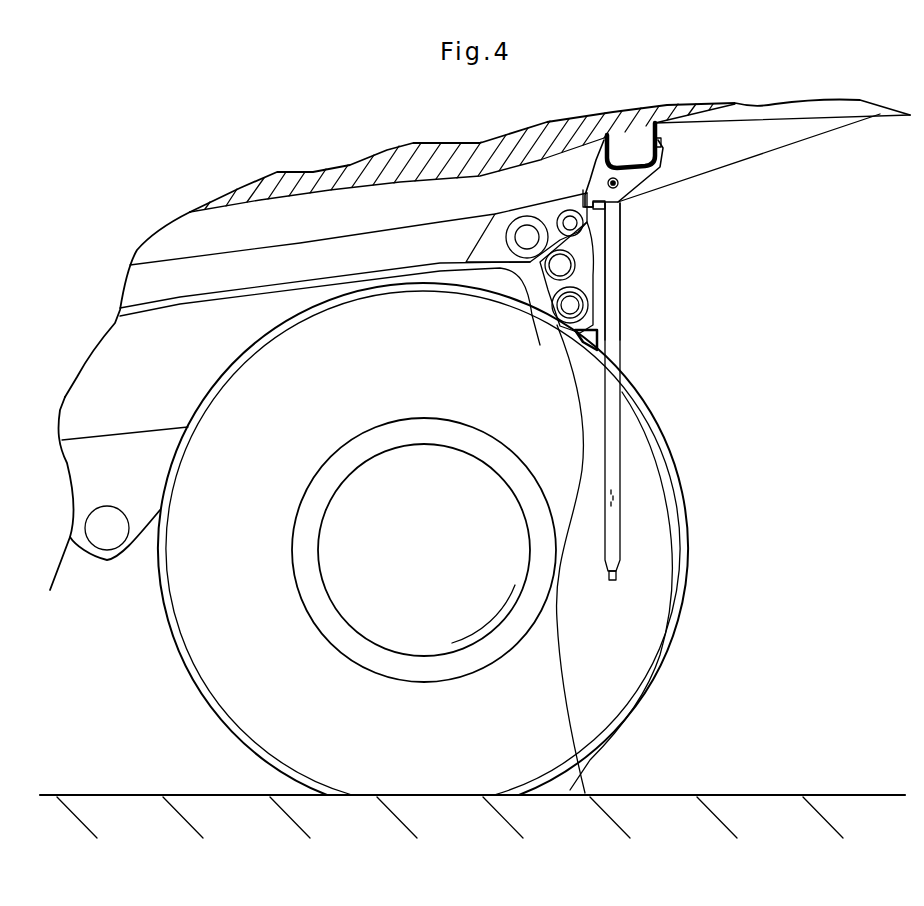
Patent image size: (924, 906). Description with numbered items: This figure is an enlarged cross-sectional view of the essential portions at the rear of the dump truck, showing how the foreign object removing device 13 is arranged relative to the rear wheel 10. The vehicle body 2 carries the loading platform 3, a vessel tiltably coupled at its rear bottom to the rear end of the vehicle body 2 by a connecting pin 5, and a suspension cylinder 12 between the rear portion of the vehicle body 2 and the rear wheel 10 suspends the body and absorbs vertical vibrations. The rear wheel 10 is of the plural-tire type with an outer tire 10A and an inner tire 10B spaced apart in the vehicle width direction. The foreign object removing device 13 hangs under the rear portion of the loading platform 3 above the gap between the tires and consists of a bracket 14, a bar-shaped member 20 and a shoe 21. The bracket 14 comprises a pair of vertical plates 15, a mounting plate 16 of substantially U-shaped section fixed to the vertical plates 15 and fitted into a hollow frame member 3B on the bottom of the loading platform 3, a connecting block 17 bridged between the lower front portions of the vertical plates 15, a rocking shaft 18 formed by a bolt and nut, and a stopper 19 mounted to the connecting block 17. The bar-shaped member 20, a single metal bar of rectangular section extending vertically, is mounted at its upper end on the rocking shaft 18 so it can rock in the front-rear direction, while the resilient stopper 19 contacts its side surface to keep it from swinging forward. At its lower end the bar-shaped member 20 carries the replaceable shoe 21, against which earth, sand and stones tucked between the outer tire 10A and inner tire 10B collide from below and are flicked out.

The vehicle body 2 is at (105, 360).
The loading platform 3 is at (152, 240).
The hollow frame member 3B is at (603, 150).
The connecting pin 5 is at (560, 267).
The rear wheel 10 is at (197, 625).
The outer tire 10A is at (243, 697).
The inner tire 10B is at (657, 465).
The suspension cylinder 12 is at (590, 337).
The foreign object removing device 13 is at (618, 406).
The bracket 14 is at (667, 169).
The vertical plate 15 is at (642, 176).
The mounting plate 16 is at (660, 147).
The connecting block 17 is at (590, 200).
The rocking shaft 18 is at (617, 187).
The stopper 19 is at (604, 208).
The bar-shaped member 20 is at (612, 303).
The shoe 21 is at (615, 577).